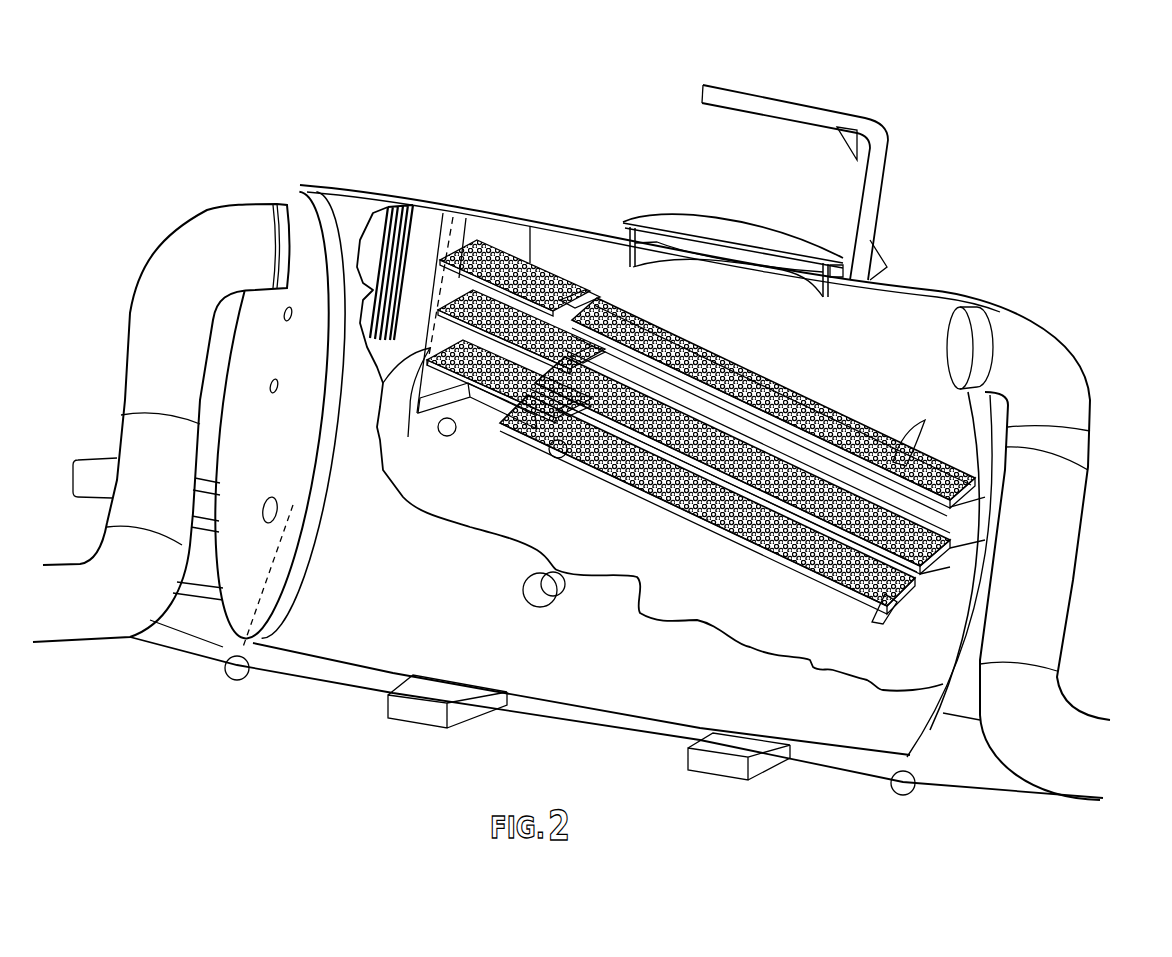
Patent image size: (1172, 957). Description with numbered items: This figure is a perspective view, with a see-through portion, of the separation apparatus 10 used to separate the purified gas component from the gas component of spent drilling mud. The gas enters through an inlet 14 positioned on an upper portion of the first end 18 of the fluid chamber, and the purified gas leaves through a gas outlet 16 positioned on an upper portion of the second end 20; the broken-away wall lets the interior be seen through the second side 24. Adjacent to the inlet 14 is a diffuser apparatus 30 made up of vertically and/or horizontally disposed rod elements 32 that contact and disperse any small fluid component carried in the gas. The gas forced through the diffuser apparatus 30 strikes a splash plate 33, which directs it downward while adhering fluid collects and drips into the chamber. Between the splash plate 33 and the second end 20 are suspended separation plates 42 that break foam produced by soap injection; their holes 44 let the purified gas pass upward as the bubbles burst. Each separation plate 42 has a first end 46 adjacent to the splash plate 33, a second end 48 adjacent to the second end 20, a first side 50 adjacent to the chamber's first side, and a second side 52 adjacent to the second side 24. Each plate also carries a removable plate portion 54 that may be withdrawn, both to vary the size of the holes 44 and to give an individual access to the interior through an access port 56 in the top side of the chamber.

The separation apparatus 10 is at (194, 152).
The inlet 14 is at (242, 237).
The gas outlet 16 is at (1062, 399).
The first end 18 is at (281, 452).
The second end 20 is at (1088, 470).
The second side 24 is at (604, 635).
The diffuser apparatus 30 is at (366, 240).
The rod elements 32 is at (373, 292).
The splash plate 33 is at (423, 400).
The separation plate 42 is at (565, 292).
The holes 44 is at (902, 446).
The first end 46 is at (380, 400).
The second end 48 is at (886, 620).
The first side 50 is at (805, 412).
The second side 52 is at (742, 387).
The removable plate portion 54 is at (852, 432).
The access port 56 is at (762, 232).